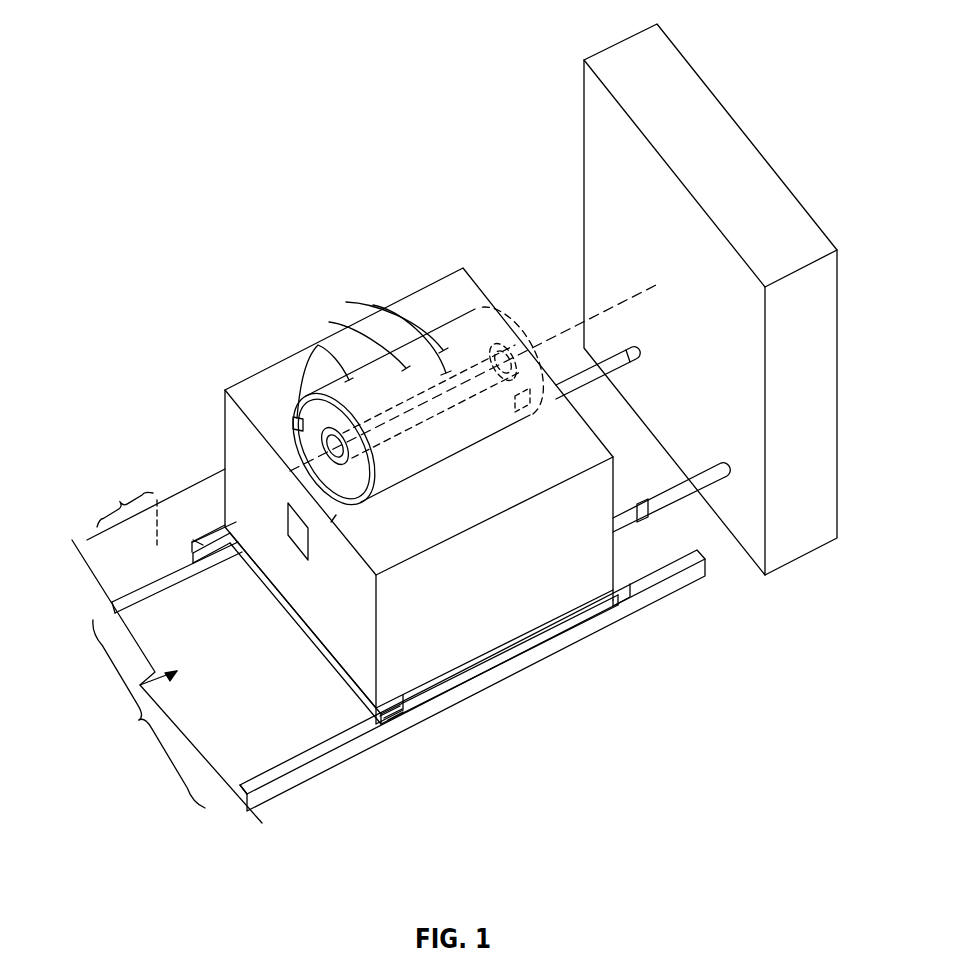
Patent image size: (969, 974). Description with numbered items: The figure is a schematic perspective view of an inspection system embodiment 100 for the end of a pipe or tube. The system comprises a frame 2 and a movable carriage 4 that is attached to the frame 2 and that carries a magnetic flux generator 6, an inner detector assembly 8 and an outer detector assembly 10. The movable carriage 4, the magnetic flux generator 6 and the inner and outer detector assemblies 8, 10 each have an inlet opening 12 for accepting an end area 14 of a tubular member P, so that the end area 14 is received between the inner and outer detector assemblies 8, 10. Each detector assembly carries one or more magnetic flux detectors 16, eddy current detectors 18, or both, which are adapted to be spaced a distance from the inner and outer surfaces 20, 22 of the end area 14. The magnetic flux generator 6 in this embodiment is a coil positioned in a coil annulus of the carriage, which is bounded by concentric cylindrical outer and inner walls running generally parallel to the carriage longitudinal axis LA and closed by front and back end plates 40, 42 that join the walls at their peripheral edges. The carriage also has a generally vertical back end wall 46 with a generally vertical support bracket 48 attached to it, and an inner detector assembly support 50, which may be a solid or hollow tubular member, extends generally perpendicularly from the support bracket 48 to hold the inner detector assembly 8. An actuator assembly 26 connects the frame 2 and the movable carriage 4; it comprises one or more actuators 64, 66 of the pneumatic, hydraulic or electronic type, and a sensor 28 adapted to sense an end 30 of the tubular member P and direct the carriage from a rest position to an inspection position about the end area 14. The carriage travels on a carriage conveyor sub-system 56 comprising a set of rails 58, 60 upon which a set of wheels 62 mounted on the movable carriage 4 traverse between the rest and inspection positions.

The embodiment 100 is at (212, 100).
The frame 2 is at (770, 212).
The movable carriage 4 is at (486, 632).
The magnetic flux generator 6 is at (433, 456).
The inner detector assembly 8 is at (308, 436).
The outer detector assembly 10 is at (303, 352).
The inlet opening 12 is at (293, 416).
The end area 14 is at (125, 500).
The magnetic flux detectors 16 is at (329, 322).
The eddy current detectors 18 is at (373, 305).
The inner surface 20 is at (160, 497).
The outer surface 22 is at (198, 540).
The actuator assembly 26 is at (614, 365).
The sensor 28 is at (270, 565).
The end 30 is at (212, 562).
The front end plate 40 is at (331, 522).
The back end plate 42 is at (520, 398).
The back end wall 46 is at (478, 330).
The support bracket 48 is at (500, 352).
The inner detector assembly support 50 is at (292, 536).
The carriage conveyor sub-system 56 is at (146, 714).
The rail 58 is at (175, 588).
The rail 60 is at (303, 775).
The wheels 62 is at (403, 715).
The actuator 64 is at (632, 353).
The actuator 66 is at (727, 460).
The carriage longitudinal axis LA is at (640, 293).
The tubular member P is at (161, 655).